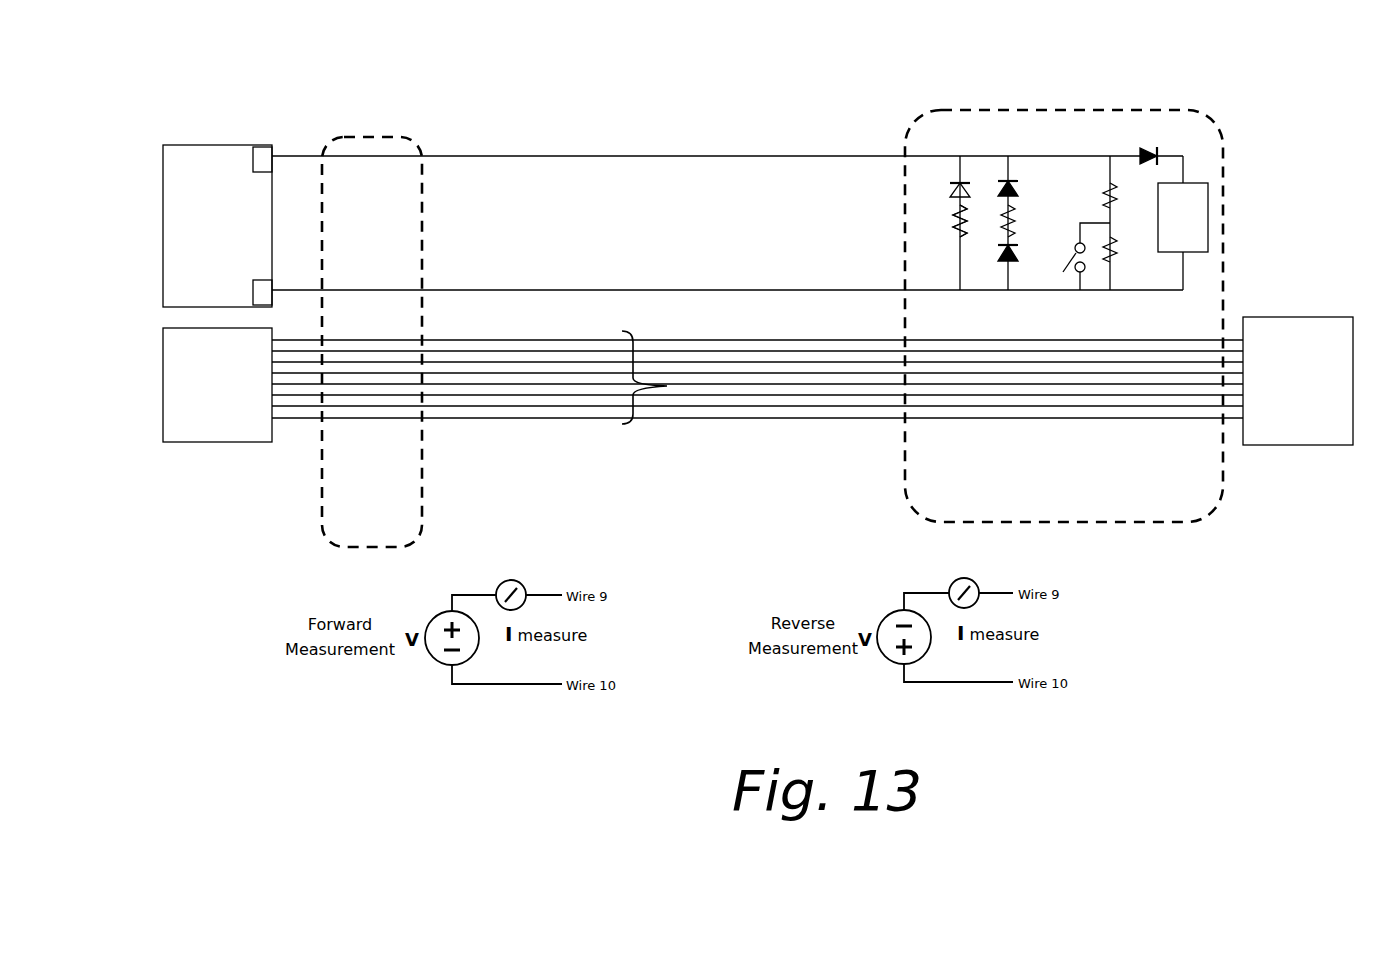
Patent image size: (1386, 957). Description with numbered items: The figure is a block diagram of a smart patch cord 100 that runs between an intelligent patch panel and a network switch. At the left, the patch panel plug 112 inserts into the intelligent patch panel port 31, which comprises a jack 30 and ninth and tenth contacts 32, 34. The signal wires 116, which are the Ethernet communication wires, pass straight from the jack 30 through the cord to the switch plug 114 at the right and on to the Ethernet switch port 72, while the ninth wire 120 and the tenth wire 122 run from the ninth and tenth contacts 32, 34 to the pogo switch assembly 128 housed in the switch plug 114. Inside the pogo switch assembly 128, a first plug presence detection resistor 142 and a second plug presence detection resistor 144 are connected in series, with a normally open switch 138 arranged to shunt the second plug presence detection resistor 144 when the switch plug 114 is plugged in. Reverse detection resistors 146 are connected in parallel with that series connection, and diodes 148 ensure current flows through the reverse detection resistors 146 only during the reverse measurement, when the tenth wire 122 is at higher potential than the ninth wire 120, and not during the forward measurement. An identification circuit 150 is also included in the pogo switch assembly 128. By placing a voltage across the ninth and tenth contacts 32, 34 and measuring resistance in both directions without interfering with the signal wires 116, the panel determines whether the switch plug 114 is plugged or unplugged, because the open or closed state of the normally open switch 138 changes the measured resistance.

The smart patch cord 100 is at (824, 68).
The port 31 is at (220, 130).
The ninth contact 32 is at (263, 157).
The tenth contact 34 is at (265, 293).
The jack 30 is at (217, 443).
The patch panel plug 112 is at (422, 537).
The ninth wire 120 is at (650, 155).
The tenth wire 122 is at (645, 291).
The signal wires 116 is at (648, 396).
The pogo switch assembly 128 is at (1056, 193).
The switch plug 114 is at (1200, 512).
The first plug presence detection resistor 142 is at (1122, 186).
The reverse detection resistors 146 is at (946, 217).
The diodes 148 is at (952, 190).
The normally open switch 138 is at (1088, 258).
The second plug presence detection resistor 144 is at (1113, 252).
The identification circuit 150 is at (1208, 214).
The Ethernet switch port 72 is at (1315, 447).